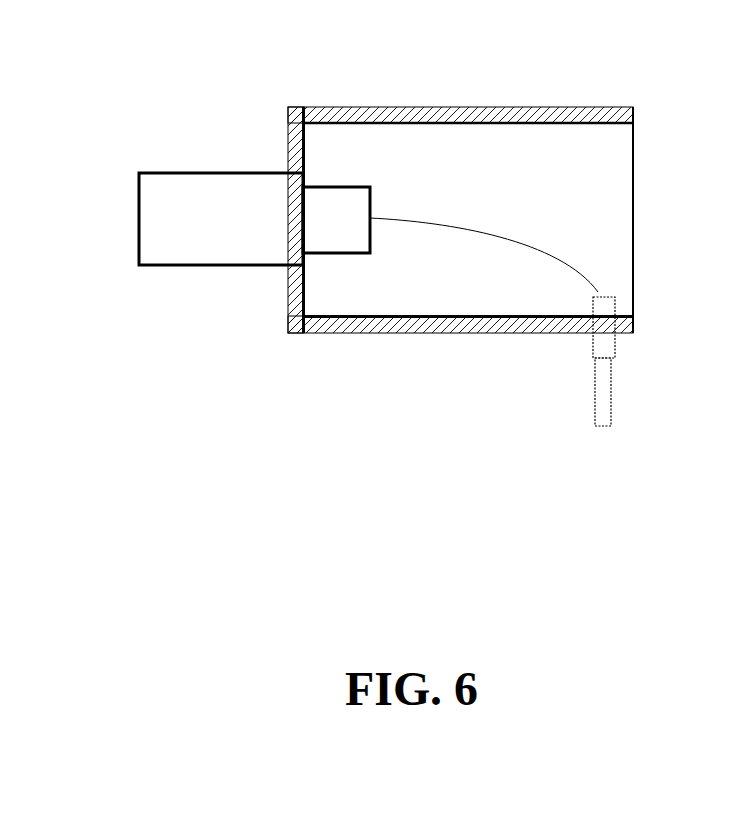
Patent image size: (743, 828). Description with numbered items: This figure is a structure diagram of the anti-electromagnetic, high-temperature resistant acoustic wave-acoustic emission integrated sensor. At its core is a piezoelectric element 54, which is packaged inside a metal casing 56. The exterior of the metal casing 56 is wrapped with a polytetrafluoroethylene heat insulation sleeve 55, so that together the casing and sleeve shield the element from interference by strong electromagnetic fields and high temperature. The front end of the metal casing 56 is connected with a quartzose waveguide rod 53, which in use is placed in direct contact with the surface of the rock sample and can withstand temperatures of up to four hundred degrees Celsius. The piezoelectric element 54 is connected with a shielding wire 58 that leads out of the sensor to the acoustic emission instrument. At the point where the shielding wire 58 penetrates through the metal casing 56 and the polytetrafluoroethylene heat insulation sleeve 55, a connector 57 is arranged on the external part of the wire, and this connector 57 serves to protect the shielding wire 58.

The quartzose waveguide rod 53 is at (254, 194).
The piezoelectric element 54 is at (351, 186).
The polytetrafluoroethylene heat insulation sleeve 55 is at (535, 112).
The metal casing 56 is at (630, 198).
The connector 57 is at (600, 318).
The shielding wire 58 is at (603, 397).